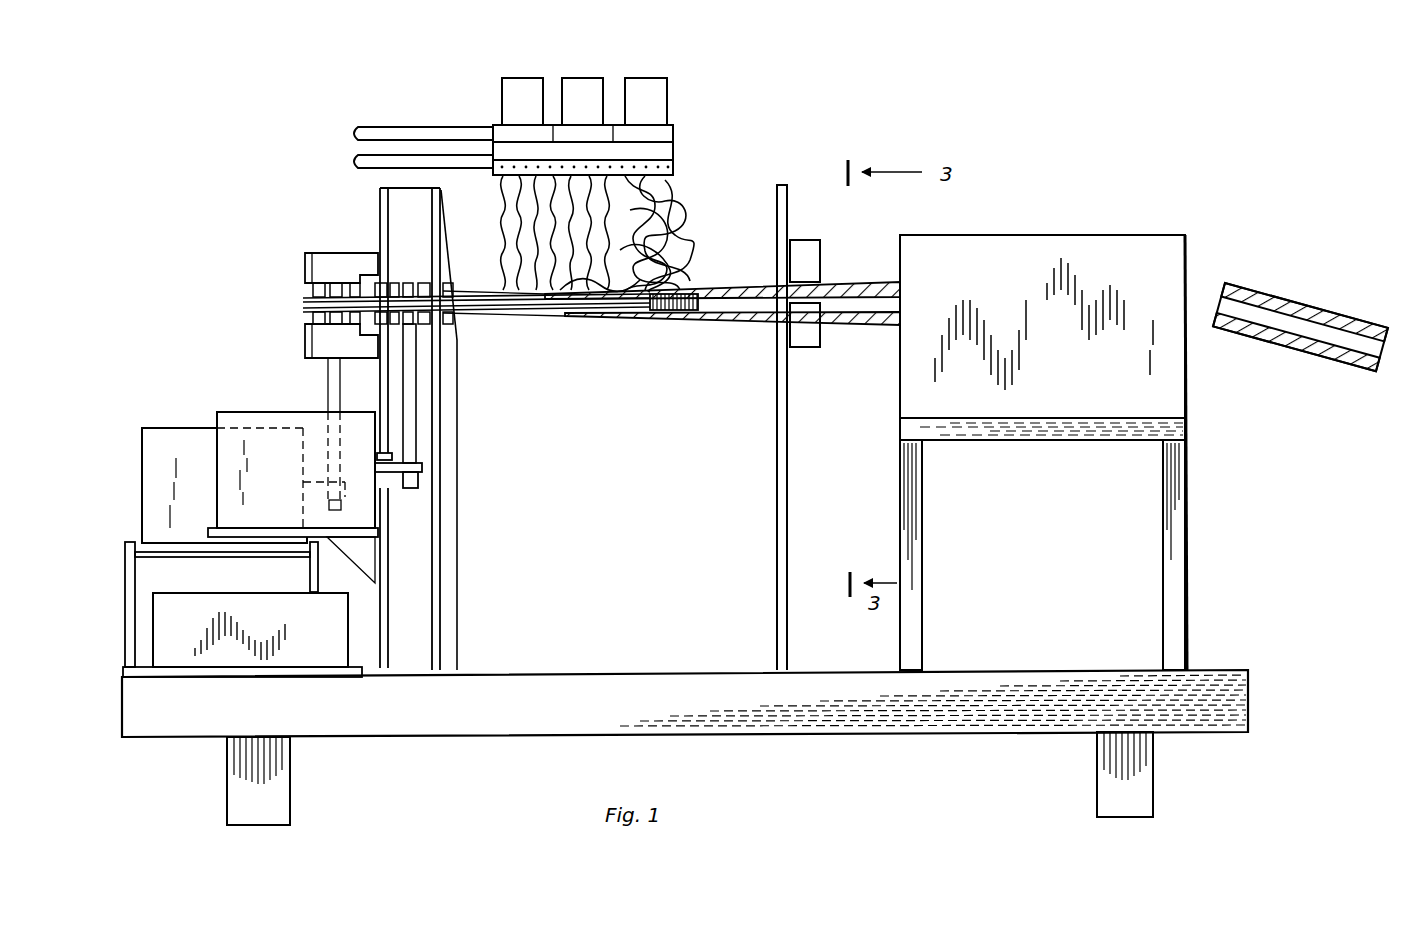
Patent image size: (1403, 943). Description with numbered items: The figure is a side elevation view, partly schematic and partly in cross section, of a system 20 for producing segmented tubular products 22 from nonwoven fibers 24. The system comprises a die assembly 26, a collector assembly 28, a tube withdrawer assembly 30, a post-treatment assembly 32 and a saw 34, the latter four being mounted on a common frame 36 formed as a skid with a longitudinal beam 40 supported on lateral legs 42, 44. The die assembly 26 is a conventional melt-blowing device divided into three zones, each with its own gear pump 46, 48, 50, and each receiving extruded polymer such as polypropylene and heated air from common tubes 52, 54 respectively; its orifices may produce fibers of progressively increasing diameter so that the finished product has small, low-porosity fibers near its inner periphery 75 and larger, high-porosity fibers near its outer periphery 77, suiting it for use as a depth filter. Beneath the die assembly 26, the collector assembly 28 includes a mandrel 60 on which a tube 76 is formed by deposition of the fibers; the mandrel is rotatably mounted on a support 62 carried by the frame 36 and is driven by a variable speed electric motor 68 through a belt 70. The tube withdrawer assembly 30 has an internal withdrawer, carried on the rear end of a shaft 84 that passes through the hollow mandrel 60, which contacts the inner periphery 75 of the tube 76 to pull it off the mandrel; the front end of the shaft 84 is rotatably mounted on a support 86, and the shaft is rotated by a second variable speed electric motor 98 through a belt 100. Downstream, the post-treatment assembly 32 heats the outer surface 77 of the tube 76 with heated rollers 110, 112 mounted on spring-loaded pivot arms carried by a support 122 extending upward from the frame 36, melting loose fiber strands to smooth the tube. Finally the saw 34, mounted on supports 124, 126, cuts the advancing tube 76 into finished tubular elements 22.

The system 20 is at (1026, 100).
The segmented tubular product 22 is at (1292, 310).
The nonwoven fibers 24 is at (500, 207).
The die assembly 26 is at (494, 100).
The collector assembly 28 is at (460, 334).
The tube withdrawer assembly 30 is at (349, 246).
The post-treatment assembly 32 is at (772, 258).
The saw 34 is at (1113, 196).
The common frame 36 is at (1264, 668).
The longitudinal beam 40 is at (140, 698).
The lateral leg 42 is at (235, 765).
The lateral leg 44 is at (1108, 758).
The gear pump 46 is at (530, 90).
The gear pump 48 is at (600, 87).
The gear pump 50 is at (648, 97).
The common tube 52 is at (372, 133).
The common tube 54 is at (435, 163).
The mandrel 60 is at (603, 321).
The support 62 is at (437, 470).
The variable speed electric motor 68 is at (150, 448).
The belt 70 is at (335, 365).
The inner periphery 75 is at (883, 298).
The tube 76 is at (722, 327).
The outer periphery 77 is at (873, 328).
The shaft 84 is at (303, 305).
The support 86 is at (304, 262).
The variable speed electric motor 98 is at (247, 412).
The belt 100 is at (410, 410).
The heated roller 110 is at (812, 242).
The heated roller 112 is at (810, 326).
The support 122 is at (779, 445).
The support 124 is at (912, 512).
The support 126 is at (1178, 495).